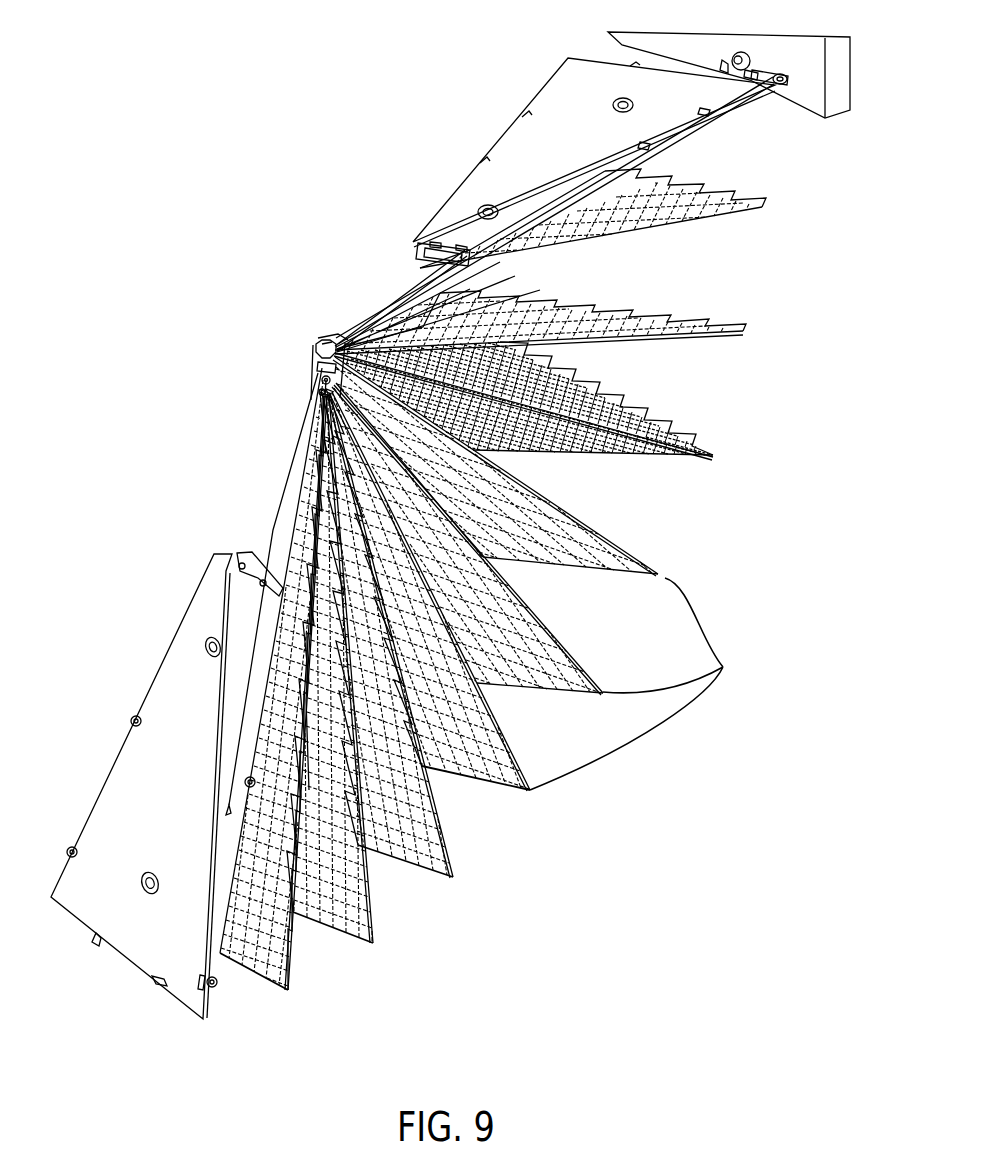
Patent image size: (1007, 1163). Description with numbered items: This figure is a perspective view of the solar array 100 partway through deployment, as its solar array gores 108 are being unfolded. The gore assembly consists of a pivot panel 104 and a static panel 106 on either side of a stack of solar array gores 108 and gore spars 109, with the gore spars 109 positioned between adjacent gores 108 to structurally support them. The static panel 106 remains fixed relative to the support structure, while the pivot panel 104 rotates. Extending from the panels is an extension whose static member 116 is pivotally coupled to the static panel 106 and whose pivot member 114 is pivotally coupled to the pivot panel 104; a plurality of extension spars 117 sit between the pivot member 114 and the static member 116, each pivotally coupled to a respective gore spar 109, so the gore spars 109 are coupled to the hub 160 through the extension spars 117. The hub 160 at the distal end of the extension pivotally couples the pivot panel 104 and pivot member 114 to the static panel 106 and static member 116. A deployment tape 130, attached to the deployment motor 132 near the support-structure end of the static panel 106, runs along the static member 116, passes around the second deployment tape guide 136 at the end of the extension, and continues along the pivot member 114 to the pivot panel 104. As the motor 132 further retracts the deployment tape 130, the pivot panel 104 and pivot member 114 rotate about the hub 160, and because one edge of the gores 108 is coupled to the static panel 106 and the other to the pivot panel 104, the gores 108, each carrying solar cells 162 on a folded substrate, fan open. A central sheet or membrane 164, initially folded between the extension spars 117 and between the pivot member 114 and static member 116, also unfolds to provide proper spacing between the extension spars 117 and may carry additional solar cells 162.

The solar array 100 is at (319, 101).
The pivot panel 104 is at (158, 670).
The static panel 106 is at (537, 113).
The solar array gores 108 is at (697, 313).
The gore spars 109 is at (723, 667).
The pivot member 114 is at (290, 493).
The static member 116 is at (414, 292).
The extension spars 117 is at (320, 430).
The deployment tape 130 is at (361, 317).
The deployment motor 132 is at (776, 90).
The second deployment tape guide 136 is at (297, 347).
The hub 160 is at (320, 334).
The solar cells 162 is at (712, 191).
The central sheet or membrane 164 is at (325, 490).